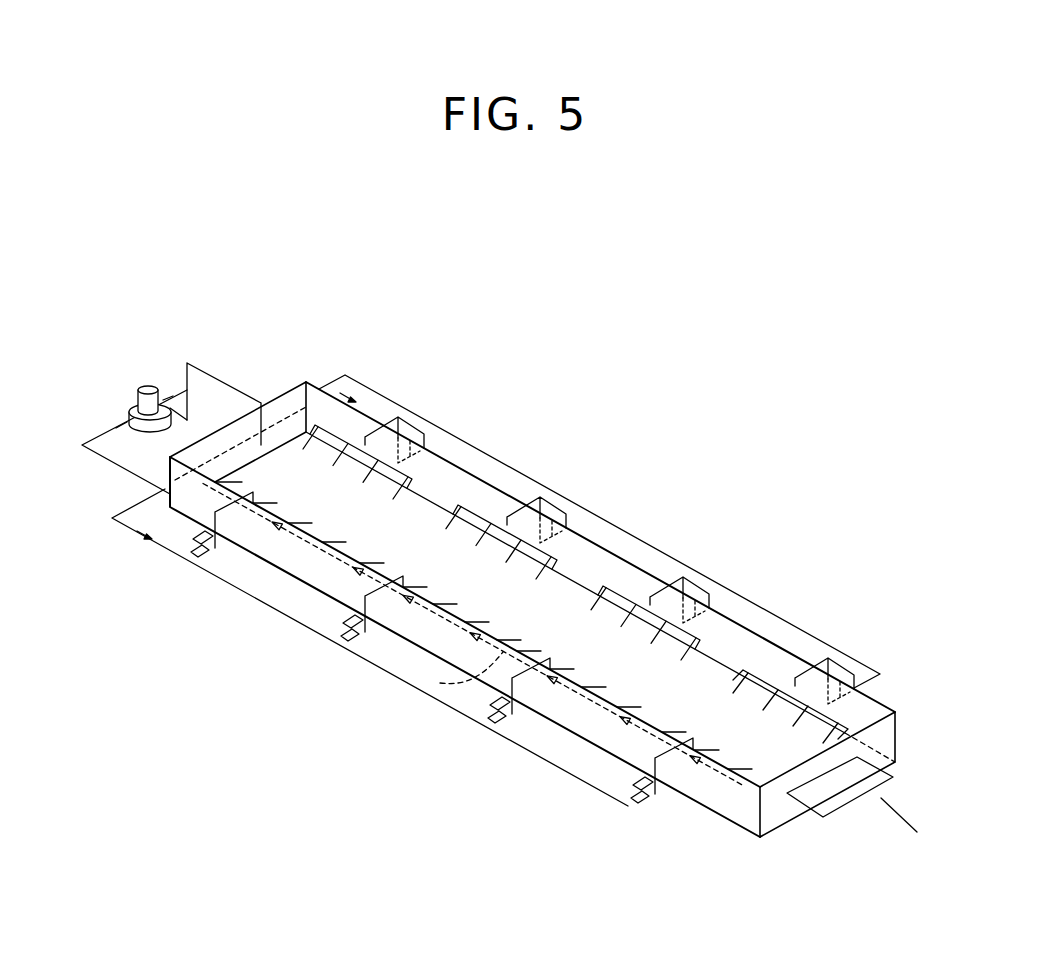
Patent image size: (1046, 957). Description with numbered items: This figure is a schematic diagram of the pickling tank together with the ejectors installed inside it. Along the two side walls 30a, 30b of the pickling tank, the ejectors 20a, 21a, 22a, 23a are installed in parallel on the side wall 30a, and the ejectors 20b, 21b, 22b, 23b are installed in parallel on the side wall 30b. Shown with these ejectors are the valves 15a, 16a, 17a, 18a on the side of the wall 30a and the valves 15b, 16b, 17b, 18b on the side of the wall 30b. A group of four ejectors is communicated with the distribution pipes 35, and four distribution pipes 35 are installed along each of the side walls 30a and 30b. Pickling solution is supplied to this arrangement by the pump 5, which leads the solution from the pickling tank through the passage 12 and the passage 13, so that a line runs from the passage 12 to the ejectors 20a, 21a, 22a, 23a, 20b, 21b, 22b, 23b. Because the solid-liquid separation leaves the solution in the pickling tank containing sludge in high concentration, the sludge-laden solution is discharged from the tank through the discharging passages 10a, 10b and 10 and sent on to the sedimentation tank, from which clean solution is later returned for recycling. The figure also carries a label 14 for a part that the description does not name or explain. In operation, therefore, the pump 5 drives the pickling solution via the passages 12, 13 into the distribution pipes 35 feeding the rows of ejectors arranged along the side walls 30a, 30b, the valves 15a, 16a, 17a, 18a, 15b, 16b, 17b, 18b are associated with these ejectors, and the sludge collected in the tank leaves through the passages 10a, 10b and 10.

The pump 5 is at (134, 402).
The passage 10 is at (572, 637).
The discharging passage 10a is at (810, 805).
The discharging passage 10b is at (893, 766).
The passage 12 is at (220, 377).
The passage 13 is at (143, 482).
The conveyor plate 14 is at (383, 397).
The valve 15a is at (198, 556).
The valve 15b is at (425, 428).
The valve 16a is at (343, 636).
The valve 16b is at (548, 505).
The valve 17a is at (496, 718).
The valve 17b is at (700, 583).
The valve 18a is at (633, 798).
The valve 18b is at (850, 660).
The ejector 20a is at (272, 505).
The ejector 20b is at (378, 470).
The ejector 21a is at (392, 562).
The ejector 21b is at (495, 543).
The ejector 22a is at (530, 648).
The ejector 22b is at (638, 623).
The ejector 23a is at (740, 760).
The ejector 23b is at (743, 672).
The side wall 30a is at (722, 795).
The side wall 30b is at (770, 628).
The distribution pipe 35 is at (643, 600).